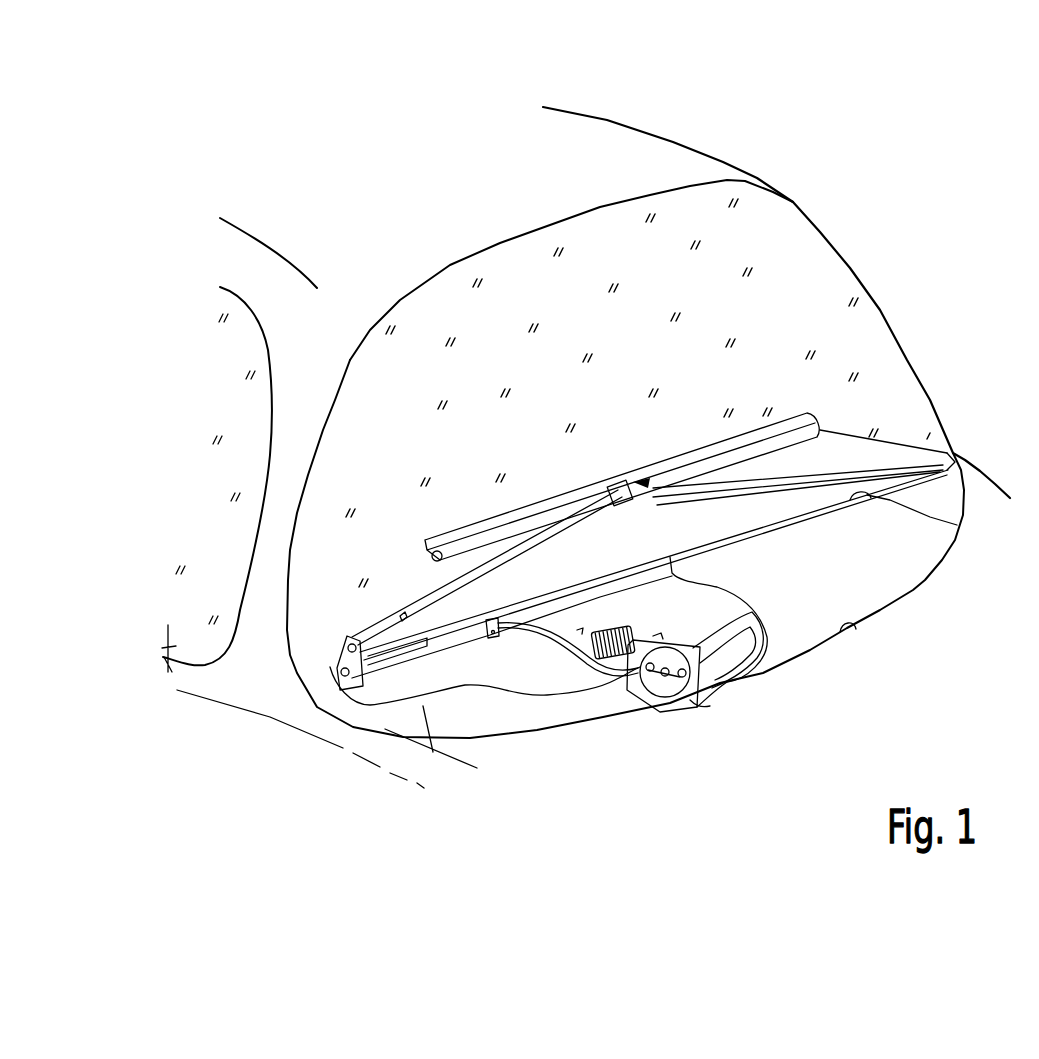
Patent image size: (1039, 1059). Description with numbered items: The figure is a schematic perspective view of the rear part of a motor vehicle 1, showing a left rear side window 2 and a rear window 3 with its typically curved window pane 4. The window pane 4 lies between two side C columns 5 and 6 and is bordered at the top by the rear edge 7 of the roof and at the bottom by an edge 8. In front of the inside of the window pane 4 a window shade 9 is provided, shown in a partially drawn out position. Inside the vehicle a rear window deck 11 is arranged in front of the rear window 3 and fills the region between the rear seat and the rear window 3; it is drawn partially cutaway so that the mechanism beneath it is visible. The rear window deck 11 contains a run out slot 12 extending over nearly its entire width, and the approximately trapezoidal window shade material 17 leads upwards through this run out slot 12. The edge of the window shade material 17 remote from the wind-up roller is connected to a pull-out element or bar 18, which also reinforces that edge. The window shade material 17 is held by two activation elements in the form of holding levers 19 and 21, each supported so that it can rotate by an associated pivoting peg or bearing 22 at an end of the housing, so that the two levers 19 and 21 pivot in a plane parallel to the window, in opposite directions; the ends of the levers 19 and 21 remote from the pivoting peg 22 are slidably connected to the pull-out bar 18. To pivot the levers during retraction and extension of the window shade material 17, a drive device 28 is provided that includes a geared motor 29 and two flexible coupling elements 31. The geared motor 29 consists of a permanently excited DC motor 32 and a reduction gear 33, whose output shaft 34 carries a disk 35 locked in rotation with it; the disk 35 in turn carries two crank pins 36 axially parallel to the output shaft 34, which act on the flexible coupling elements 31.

The motor vehicle 1 is at (689, 120).
The left rear side window 2 is at (162, 488).
The rear window 3 is at (592, 258).
The window pane 4 is at (470, 353).
The side C column 5 is at (275, 525).
The side C column 6 is at (843, 285).
The rear edge of the roof 7 is at (498, 248).
The edge 8 is at (857, 628).
The window shade 9 is at (765, 368).
The rear window deck 11 is at (850, 578).
The run out slot 12 is at (957, 525).
The window shade material 17 is at (648, 552).
The pull-out element or bar 18 is at (500, 523).
The holding lever 19 is at (410, 615).
The holding lever 21 is at (347, 640).
The pivoting peg or bearing 22 is at (347, 673).
The drive device 28 is at (546, 664).
The geared motor 29 is at (683, 611).
The flexible coupling element 31 is at (457, 652).
The permanently excited DC motor 32 is at (612, 628).
The reduction gear 33 is at (637, 694).
The output shaft 34 is at (680, 710).
The disk 35 is at (763, 607).
The crank pins 36 is at (700, 690).